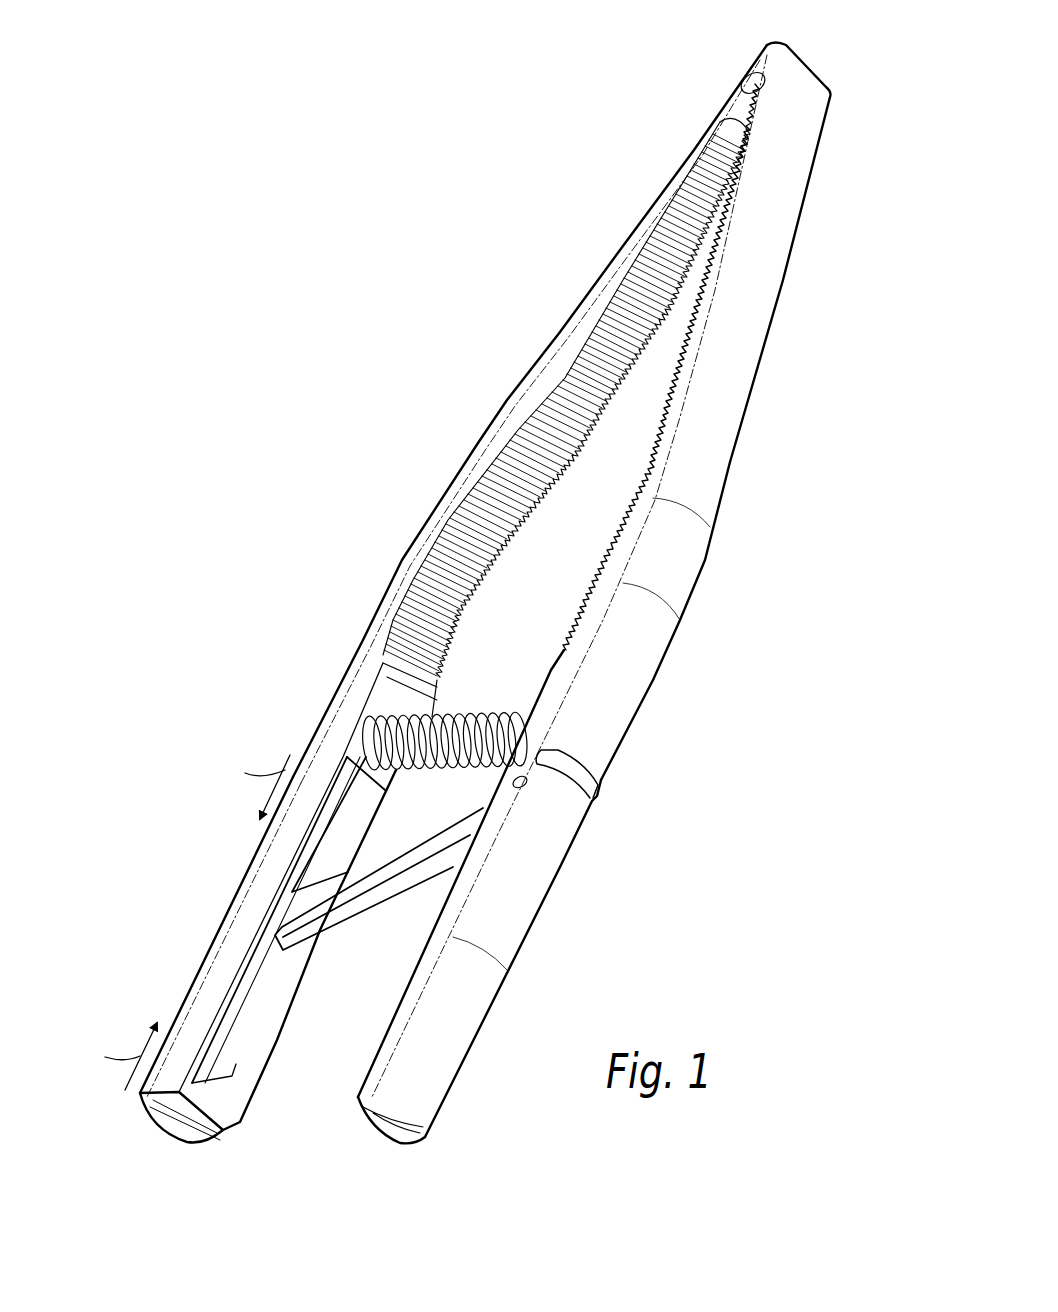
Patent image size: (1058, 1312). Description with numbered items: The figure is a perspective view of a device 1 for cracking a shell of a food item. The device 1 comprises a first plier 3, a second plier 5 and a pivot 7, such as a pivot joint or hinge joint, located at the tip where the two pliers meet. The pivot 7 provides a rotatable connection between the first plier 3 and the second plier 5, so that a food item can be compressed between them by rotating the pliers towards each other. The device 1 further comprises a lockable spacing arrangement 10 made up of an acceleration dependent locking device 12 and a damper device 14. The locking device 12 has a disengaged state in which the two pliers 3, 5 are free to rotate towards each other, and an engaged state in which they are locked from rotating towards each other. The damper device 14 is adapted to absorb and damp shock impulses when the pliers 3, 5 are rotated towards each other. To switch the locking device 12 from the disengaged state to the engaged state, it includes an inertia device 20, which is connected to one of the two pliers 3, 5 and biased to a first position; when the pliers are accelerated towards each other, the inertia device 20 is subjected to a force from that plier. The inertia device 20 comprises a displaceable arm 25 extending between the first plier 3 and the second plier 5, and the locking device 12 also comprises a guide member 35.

The device 1 is at (306, 362).
The first plier 3 is at (712, 463).
The second plier 5 is at (365, 682).
The pivot 7 is at (752, 83).
The lockable spacing arrangement 10 is at (266, 612).
The locking device 12 is at (196, 826).
The damper device 14 is at (470, 713).
The inertia device 20 is at (406, 926).
The displaceable arm 25 is at (352, 907).
The guide member 35 is at (253, 1018).